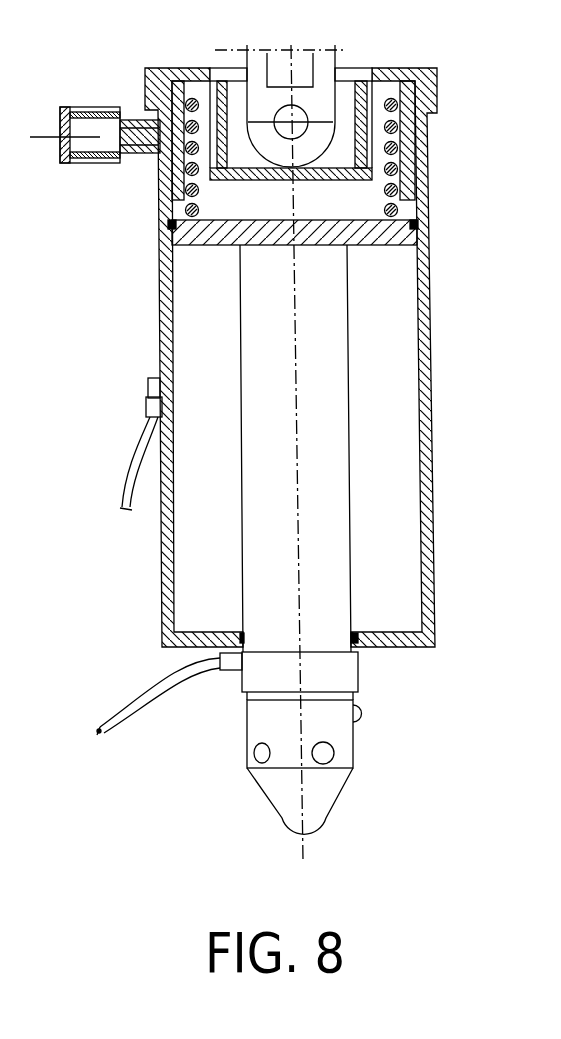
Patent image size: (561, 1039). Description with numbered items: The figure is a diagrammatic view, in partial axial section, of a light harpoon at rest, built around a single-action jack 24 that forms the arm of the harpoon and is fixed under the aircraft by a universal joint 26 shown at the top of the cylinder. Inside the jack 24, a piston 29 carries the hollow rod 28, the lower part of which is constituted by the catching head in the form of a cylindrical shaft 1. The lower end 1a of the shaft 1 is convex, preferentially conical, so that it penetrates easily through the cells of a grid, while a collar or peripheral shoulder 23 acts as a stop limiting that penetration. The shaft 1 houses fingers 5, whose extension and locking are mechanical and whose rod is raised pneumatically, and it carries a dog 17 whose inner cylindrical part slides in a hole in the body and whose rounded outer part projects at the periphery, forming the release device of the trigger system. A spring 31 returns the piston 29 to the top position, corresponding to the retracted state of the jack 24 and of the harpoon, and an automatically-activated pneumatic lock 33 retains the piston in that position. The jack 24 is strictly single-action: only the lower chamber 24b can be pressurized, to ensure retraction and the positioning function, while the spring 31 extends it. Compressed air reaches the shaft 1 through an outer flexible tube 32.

The cylindrical shaft 1 is at (304, 767).
The lower end of the shaft 1a is at (333, 812).
The fingers 5 is at (327, 753).
The dog 17 is at (360, 722).
The collar or peripheral shoulder 23 is at (248, 695).
The jack 24 is at (162, 303).
The lower chamber of the jack 24b is at (382, 545).
The universal joint 26 is at (255, 102).
The rod of the jack 28 is at (258, 322).
The piston 29 is at (208, 237).
The spring 31 is at (400, 183).
The outer flexible tube 32 is at (137, 690).
The pneumatic lock 33 is at (105, 110).